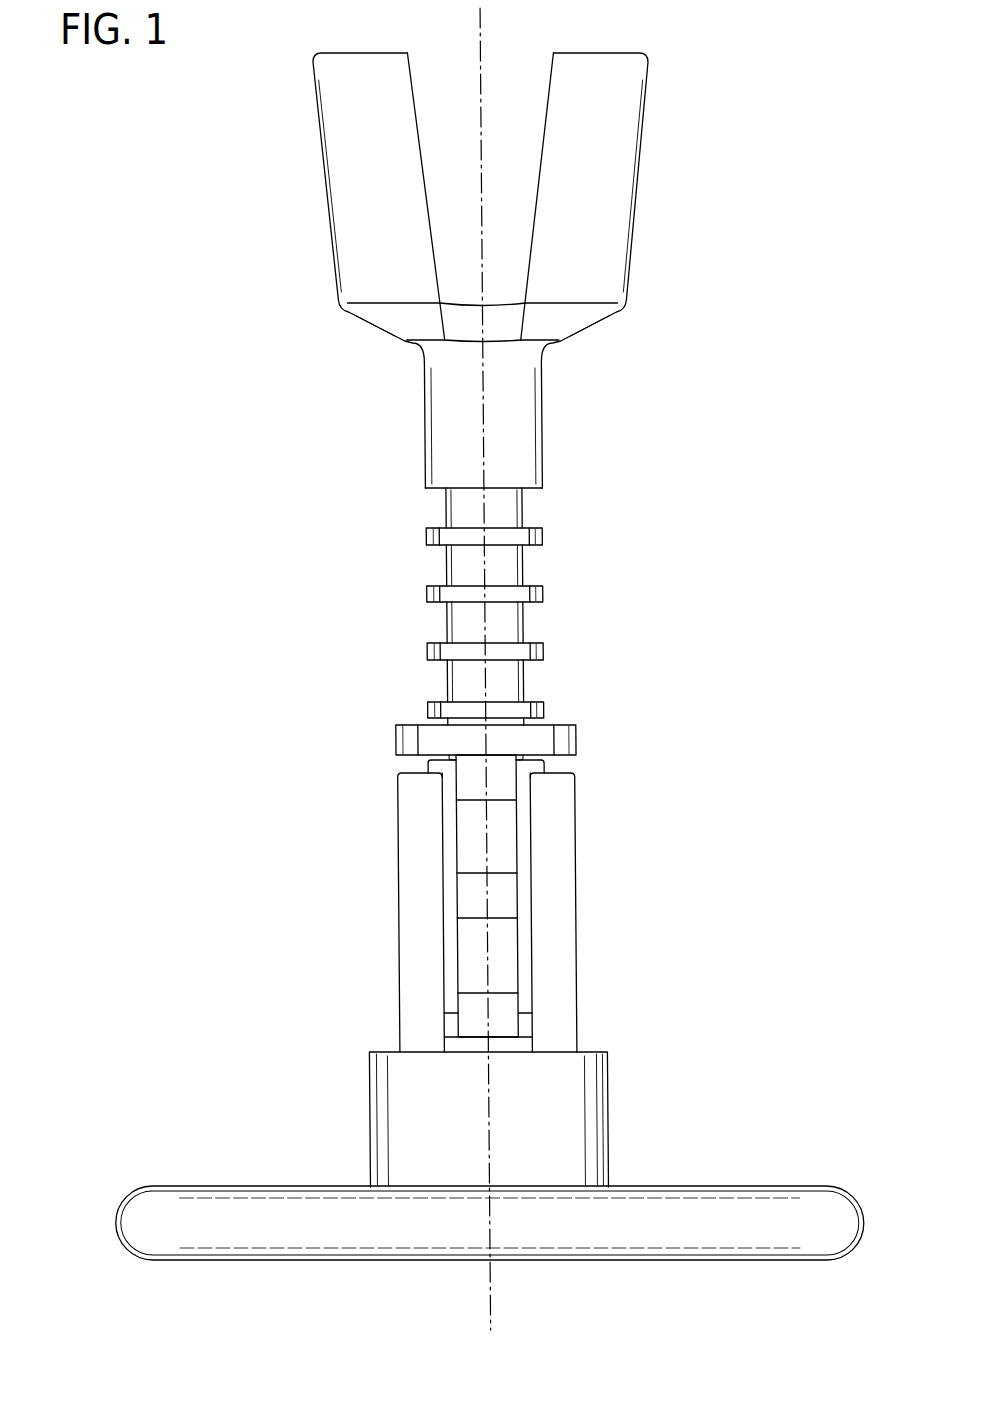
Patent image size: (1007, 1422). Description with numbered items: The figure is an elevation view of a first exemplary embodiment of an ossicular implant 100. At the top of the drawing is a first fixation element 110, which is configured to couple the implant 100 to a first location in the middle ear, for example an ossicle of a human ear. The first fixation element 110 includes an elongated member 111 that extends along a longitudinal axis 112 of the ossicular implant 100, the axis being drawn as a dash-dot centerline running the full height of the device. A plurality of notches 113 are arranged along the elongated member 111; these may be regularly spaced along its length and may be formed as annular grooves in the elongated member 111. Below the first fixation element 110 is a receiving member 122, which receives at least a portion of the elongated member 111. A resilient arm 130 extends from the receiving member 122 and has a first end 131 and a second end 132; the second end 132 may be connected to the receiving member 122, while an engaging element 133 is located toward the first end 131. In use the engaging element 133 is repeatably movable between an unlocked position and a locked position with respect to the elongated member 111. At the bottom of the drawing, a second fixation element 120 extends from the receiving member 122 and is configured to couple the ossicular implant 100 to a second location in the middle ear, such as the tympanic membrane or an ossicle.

The ossicular implant 100 is at (793, 63).
The first fixation element 110 is at (383, 370).
The elongated member 111 is at (538, 404).
The longitudinal axis 112 is at (481, 27).
The plurality of notches 113 is at (442, 512).
The second fixation element 120 is at (106, 1222).
The receiving member 122 is at (391, 900).
The resilient arm 130 is at (498, 893).
The first end 131 is at (512, 785).
The second end 132 is at (515, 1027).
The engaging element 133 is at (570, 738).